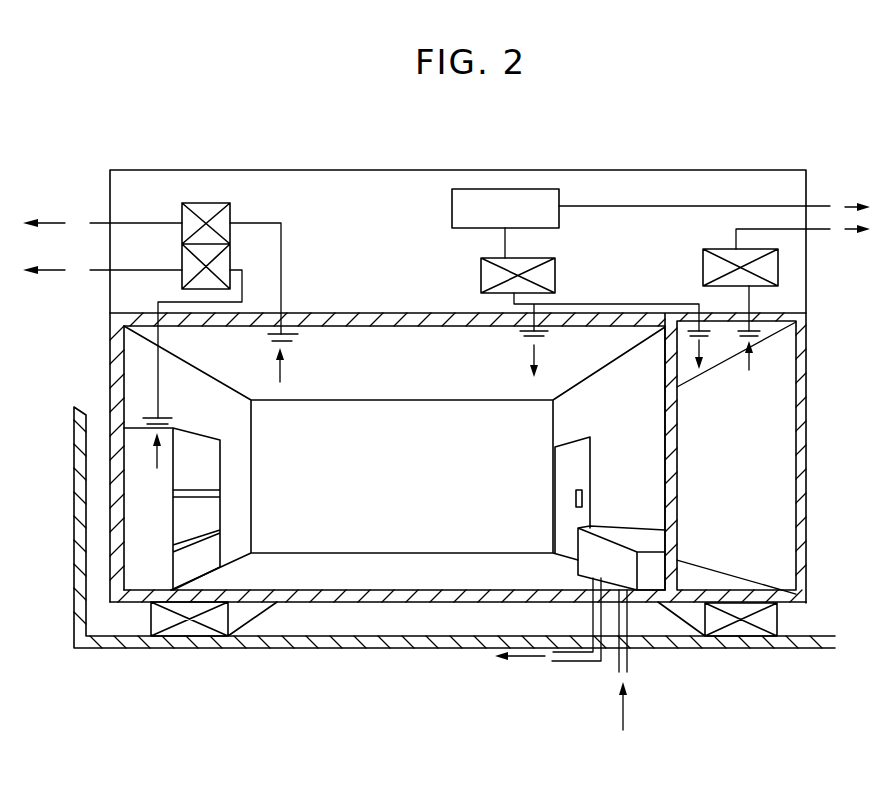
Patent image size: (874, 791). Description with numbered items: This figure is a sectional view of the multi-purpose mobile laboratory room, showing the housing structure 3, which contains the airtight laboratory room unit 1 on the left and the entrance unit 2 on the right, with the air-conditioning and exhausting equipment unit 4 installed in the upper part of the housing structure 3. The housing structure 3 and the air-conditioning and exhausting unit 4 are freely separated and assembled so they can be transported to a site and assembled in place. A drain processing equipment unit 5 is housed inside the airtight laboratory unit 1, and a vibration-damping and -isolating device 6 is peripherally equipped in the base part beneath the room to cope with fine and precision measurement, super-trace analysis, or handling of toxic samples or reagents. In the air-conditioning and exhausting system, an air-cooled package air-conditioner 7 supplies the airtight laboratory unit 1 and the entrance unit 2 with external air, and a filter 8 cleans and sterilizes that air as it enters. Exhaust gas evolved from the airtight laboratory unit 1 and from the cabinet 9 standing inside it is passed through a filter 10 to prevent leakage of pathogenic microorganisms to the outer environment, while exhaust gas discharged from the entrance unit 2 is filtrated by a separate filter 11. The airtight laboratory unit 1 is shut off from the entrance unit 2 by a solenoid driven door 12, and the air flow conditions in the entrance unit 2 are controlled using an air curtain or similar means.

The airtight laboratory room unit 1 is at (440, 520).
The entrance unit 2 is at (755, 480).
The housing structure 3 is at (490, 595).
The air-conditioning and exhausting equipment unit 4 is at (368, 214).
The drain processing equipment unit 5 is at (603, 555).
The vibration-damping and -isolating device 6 is at (743, 628).
The air-cooled package air-conditioner 7 is at (493, 207).
The filter 8 is at (545, 258).
The cabinet 9 is at (143, 528).
The filter 10 is at (233, 244).
The filter 11 is at (778, 266).
The solenoid driven door 12 is at (570, 480).